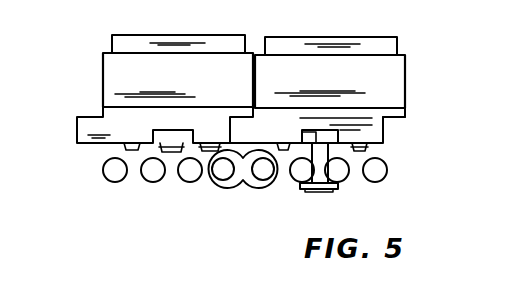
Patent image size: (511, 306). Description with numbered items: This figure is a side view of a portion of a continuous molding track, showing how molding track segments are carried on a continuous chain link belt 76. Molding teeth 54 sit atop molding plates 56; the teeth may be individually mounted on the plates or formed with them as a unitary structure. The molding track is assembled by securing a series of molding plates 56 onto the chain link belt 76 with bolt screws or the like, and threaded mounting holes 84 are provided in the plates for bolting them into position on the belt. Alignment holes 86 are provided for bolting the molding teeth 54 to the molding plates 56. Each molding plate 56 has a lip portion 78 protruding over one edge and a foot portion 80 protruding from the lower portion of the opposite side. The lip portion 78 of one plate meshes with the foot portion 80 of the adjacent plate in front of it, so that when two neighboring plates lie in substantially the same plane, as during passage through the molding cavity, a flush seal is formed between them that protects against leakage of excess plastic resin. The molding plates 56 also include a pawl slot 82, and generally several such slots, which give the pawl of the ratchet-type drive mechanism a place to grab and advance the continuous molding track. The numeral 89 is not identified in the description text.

The molding teeth 54 is at (190, 83).
The molding plates 56 is at (292, 130).
The chain link belt 76 is at (118, 165).
The lip portion 78 is at (405, 116).
The foot portion 80 is at (250, 132).
The pawl slot 82 is at (340, 143).
The threaded mounting holes 84 is at (312, 160).
The alignment holes 86 is at (125, 150).
The mounting tab 89 is at (375, 149).